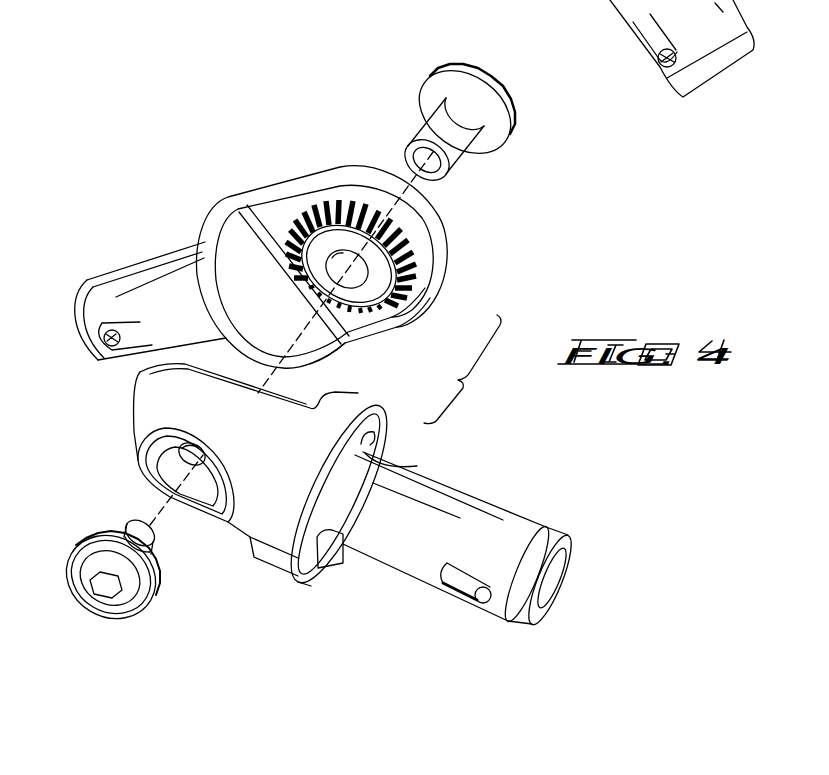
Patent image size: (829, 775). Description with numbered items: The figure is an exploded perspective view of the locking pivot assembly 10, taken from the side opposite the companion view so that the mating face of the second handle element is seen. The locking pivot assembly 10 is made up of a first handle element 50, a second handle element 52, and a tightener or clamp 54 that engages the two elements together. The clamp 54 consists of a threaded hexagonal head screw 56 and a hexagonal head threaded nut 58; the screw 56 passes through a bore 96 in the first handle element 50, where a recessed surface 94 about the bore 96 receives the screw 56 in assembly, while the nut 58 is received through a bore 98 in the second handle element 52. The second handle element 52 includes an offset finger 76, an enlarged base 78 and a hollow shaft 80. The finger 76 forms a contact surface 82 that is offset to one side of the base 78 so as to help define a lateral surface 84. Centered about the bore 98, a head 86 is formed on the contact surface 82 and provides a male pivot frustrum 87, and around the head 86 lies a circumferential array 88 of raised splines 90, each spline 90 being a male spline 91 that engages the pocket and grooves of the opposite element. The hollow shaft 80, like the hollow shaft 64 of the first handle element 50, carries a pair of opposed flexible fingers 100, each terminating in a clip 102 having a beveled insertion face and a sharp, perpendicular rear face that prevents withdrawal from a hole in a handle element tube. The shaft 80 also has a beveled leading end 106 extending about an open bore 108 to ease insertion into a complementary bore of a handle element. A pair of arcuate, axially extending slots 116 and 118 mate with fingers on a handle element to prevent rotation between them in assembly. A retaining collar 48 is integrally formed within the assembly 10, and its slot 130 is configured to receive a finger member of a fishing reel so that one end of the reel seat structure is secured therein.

The locking pivot assembly 10 is at (162, 84).
The retaining collar 48 is at (295, 593).
The first handle element 50 is at (250, 522).
The second handle element 52 is at (266, 178).
The tightener 54 is at (512, 98).
The threaded hexagonal head screw 56 is at (80, 540).
The hexagonal head threaded nut 58 is at (500, 140).
The hollow shaft 64 is at (487, 500).
The offset finger 76 is at (310, 163).
The enlarged base 78 is at (210, 246).
The hollow shaft 80 is at (140, 274).
The contact surface 82 is at (341, 298).
The lateral surface 84 is at (248, 305).
The head 86 is at (405, 270).
The male pivot frustrum 87 is at (350, 327).
The circumferential array 88 is at (433, 292).
The raised spline 90 is at (420, 318).
The male spline 91 is at (433, 306).
The recessed surface 94 is at (178, 468).
The bore 96 is at (180, 456).
The bore 98 is at (240, 203).
The flexible fingers 100 is at (138, 323).
The clip 102 is at (110, 352).
The beveled leading end 106 is at (562, 535).
The open bore 108 is at (562, 580).
The slot 116 is at (405, 470).
The slot 118 is at (357, 547).
The slot 130 is at (320, 562).